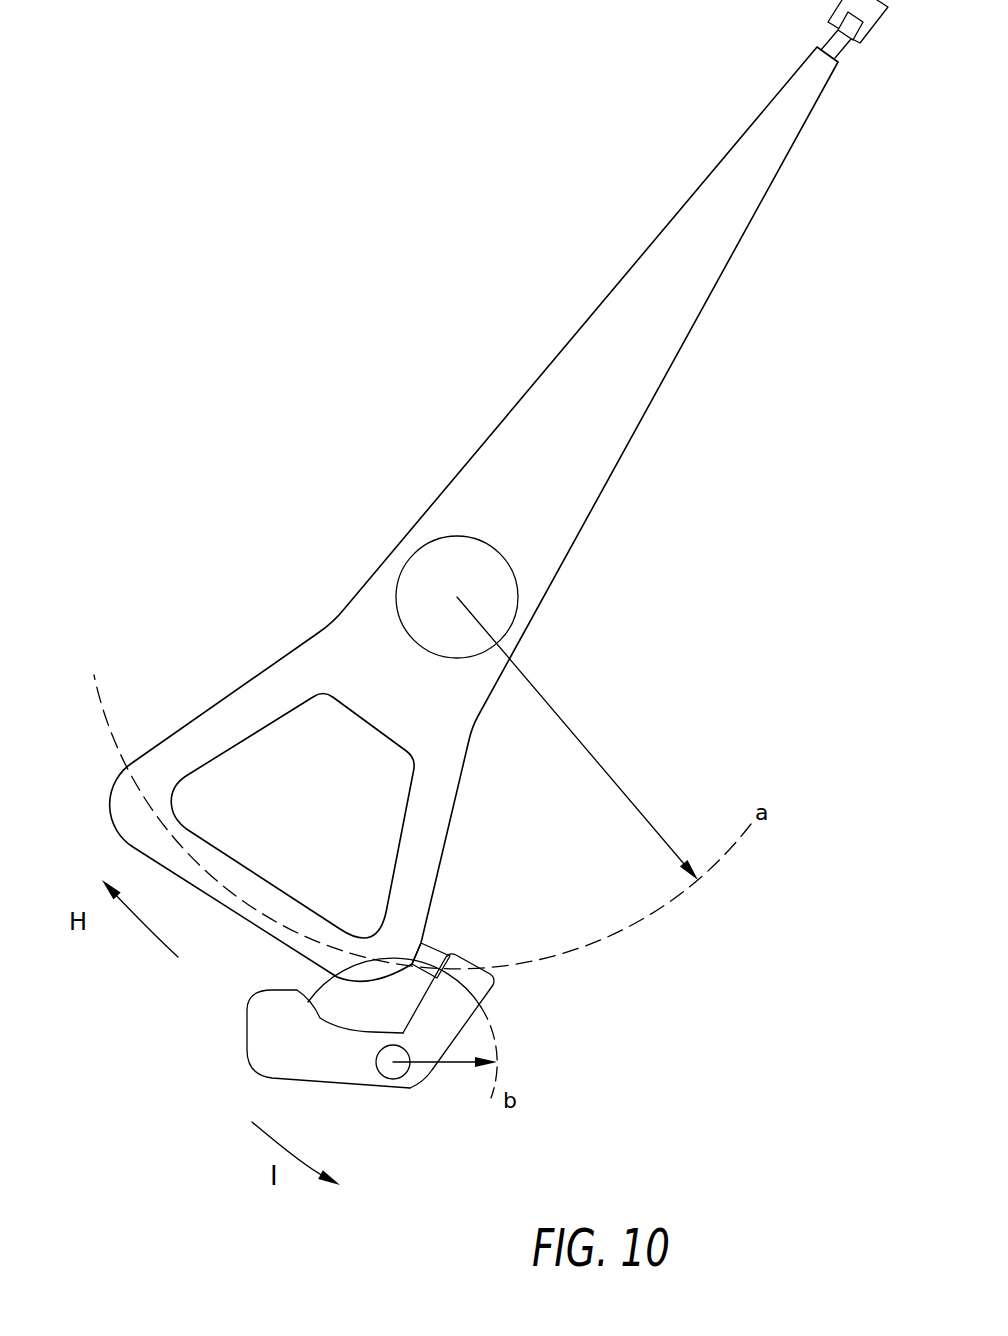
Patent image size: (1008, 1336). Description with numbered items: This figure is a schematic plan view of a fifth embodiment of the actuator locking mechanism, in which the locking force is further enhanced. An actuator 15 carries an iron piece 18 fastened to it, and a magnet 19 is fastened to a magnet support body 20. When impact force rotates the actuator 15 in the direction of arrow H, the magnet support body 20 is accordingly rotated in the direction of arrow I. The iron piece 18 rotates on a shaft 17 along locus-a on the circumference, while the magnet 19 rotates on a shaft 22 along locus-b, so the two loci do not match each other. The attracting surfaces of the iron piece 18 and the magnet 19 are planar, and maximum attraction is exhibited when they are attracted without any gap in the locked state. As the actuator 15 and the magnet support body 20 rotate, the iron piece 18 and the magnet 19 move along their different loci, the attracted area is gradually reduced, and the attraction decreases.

The actuator 15 is at (563, 562).
The shaft 17 is at (448, 591).
The iron piece 18 is at (427, 952).
The magnet 19 is at (447, 955).
The magnet support body 20 is at (332, 1082).
The shaft 22 is at (395, 1070).